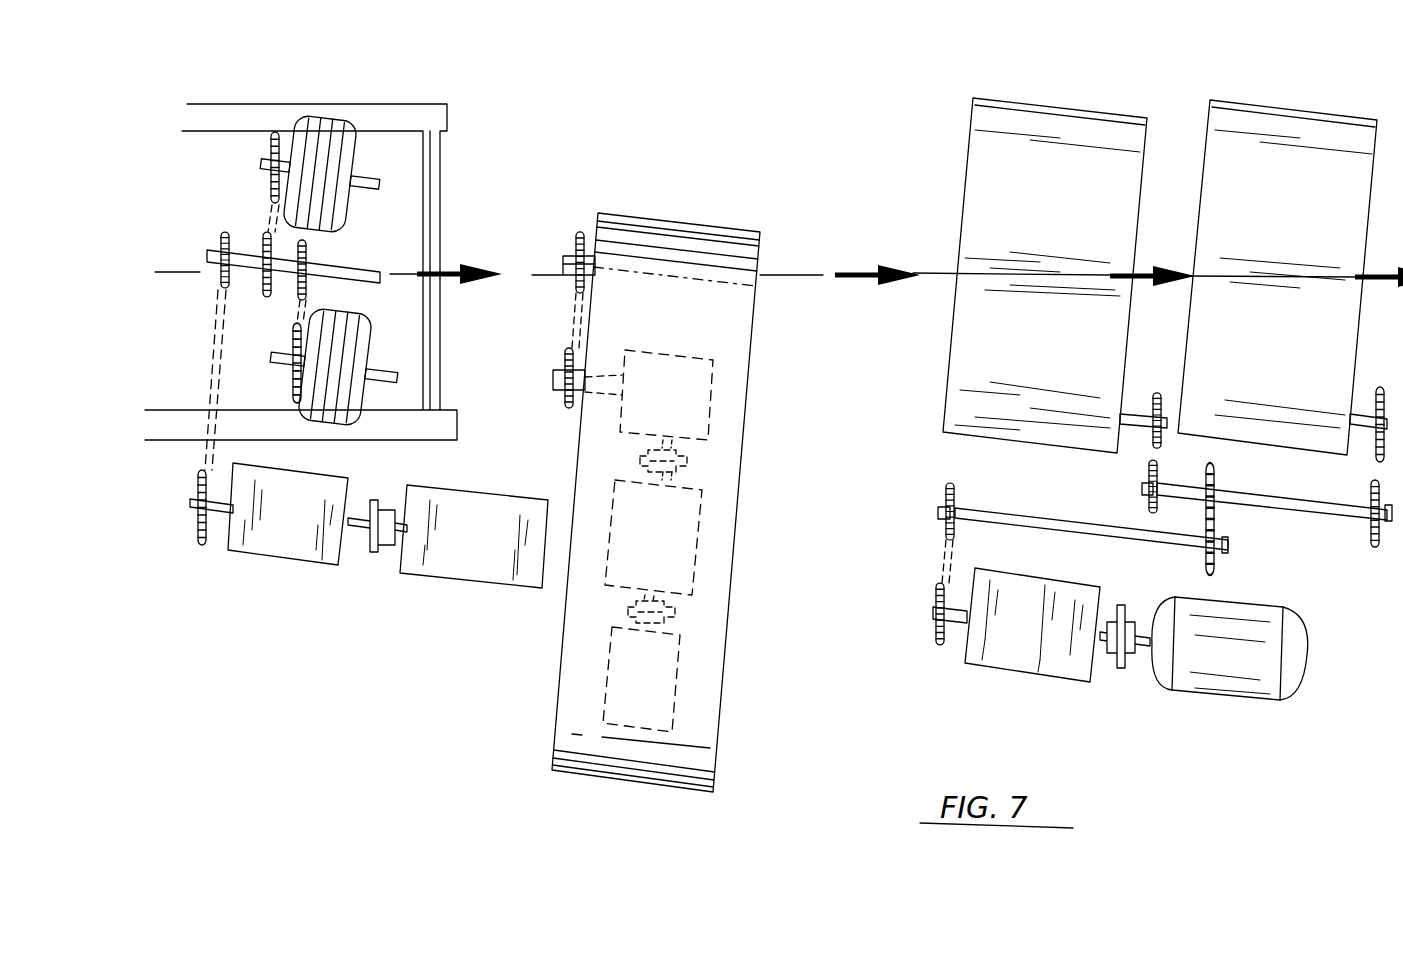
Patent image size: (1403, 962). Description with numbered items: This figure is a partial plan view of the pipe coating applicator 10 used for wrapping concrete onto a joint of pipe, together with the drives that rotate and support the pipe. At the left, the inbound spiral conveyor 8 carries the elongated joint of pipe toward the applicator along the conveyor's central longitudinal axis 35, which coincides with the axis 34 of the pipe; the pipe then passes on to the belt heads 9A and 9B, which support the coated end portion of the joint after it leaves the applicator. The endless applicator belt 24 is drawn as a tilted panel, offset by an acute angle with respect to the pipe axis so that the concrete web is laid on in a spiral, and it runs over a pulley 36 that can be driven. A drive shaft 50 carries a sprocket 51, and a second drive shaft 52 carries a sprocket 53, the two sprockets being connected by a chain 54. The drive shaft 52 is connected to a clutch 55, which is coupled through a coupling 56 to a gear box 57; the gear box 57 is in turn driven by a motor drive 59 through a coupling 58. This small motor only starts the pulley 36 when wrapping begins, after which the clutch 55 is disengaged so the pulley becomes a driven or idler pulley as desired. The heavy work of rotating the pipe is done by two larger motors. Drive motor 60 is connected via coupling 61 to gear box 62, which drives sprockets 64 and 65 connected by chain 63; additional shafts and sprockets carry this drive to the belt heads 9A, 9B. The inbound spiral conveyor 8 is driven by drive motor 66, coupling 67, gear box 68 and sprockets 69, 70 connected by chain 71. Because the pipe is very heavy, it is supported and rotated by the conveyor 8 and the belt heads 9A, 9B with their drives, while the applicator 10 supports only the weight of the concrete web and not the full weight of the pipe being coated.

The inbound spiral conveyor 8 is at (301, 292).
The belt head 9A is at (1102, 112).
The belt head 9B is at (1327, 112).
The panel processing apparatus 10 is at (815, 86).
The conveyor table 24 is at (704, 223).
The conveyor path 34 is at (776, 277).
The feed shaft 35 is at (195, 273).
The processing station 36 is at (692, 502).
The drive shaft housing 50 is at (563, 258).
The upper sprocket 51 is at (583, 232).
The lower shaft housing 52 is at (555, 378).
The lower sprocket 53 is at (568, 357).
The drive chain 54 is at (573, 322).
The gear box 55 is at (710, 400).
The coupling 56 is at (688, 462).
The gear box 57 is at (697, 547).
The coupling 58 is at (680, 615).
The gear box 59 is at (673, 693).
The drive motor 60 is at (1267, 702).
The coupling 61 is at (1118, 670).
The gear box 62 is at (1000, 657).
The chain 63 is at (940, 558).
The sprocket 64 is at (933, 637).
The sprocket 65 is at (952, 483).
The drive motor 66 is at (520, 590).
The coupling 67 is at (375, 555).
The gear box 68 is at (330, 562).
The sprocket 69 is at (202, 548).
The sprocket 70 is at (225, 232).
The chain 71 is at (210, 395).